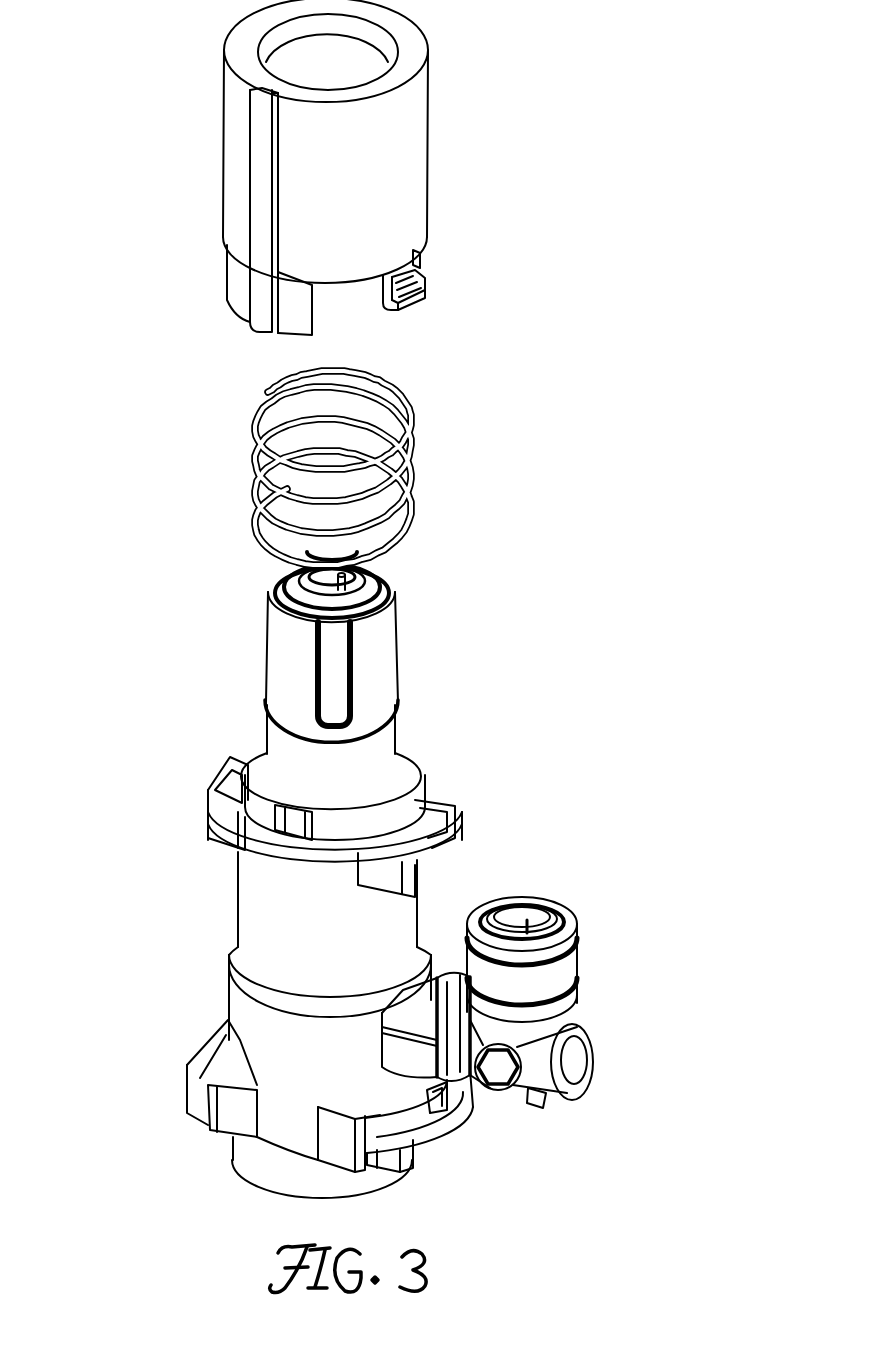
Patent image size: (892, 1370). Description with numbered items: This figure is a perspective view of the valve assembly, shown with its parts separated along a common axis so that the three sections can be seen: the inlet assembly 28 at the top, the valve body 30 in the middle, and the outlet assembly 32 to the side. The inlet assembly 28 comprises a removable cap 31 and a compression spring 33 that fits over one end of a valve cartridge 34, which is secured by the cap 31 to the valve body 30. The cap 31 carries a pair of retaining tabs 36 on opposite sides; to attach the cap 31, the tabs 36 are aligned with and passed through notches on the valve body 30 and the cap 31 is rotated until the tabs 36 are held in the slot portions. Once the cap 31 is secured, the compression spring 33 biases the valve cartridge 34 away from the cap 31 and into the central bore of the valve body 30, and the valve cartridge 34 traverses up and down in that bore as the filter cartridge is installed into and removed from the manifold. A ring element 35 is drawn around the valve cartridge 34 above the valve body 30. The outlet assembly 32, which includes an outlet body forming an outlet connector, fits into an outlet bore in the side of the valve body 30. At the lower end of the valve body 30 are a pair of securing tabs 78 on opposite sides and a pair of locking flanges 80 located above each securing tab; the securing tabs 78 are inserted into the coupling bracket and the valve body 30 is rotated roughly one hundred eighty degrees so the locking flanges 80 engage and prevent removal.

The inlet assembly 28 is at (196, 444).
The valve body 30 is at (184, 961).
The removable cap 31 is at (364, 167).
The outlet assembly 32 is at (556, 888).
The compression spring 33 is at (413, 393).
The valve cartridge 34 is at (383, 668).
The retaining ring 35 is at (455, 824).
The retaining tabs 36 is at (418, 298).
The securing tabs 78 is at (314, 1119).
The locking flanges 80 is at (447, 1098).